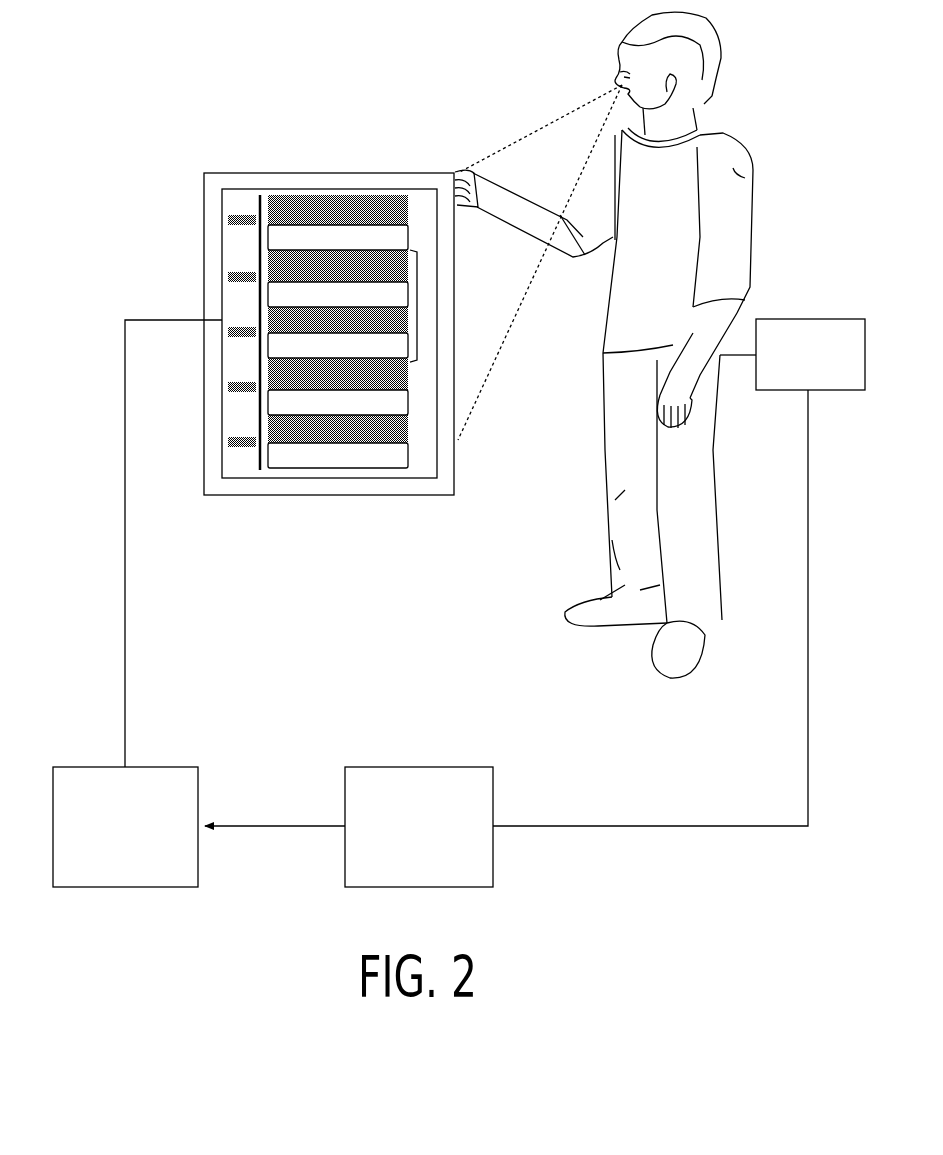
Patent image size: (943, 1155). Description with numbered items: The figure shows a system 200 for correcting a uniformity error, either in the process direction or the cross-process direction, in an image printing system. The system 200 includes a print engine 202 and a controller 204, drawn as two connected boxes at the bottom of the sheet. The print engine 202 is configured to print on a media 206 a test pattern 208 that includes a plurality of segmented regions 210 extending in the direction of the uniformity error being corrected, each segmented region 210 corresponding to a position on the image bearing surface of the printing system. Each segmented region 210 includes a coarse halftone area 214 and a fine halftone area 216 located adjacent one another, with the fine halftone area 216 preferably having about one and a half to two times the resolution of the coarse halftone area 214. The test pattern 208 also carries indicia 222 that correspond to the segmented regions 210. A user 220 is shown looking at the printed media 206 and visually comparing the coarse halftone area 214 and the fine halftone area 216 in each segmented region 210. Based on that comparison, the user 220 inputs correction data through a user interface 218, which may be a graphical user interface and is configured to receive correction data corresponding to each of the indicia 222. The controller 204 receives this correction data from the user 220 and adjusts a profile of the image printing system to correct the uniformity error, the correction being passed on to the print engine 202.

The system 200 is at (118, 141).
The print engine 202 is at (85, 763).
The controller 204 is at (418, 763).
The media 206 is at (250, 172).
The test pattern 208 is at (222, 353).
The segmented region 210 is at (417, 277).
The coarse halftone area 214 is at (405, 426).
The fine halftone area 216 is at (406, 457).
The user interface 218 is at (808, 319).
The user 220 is at (703, 122).
The indicia 222 is at (235, 230).